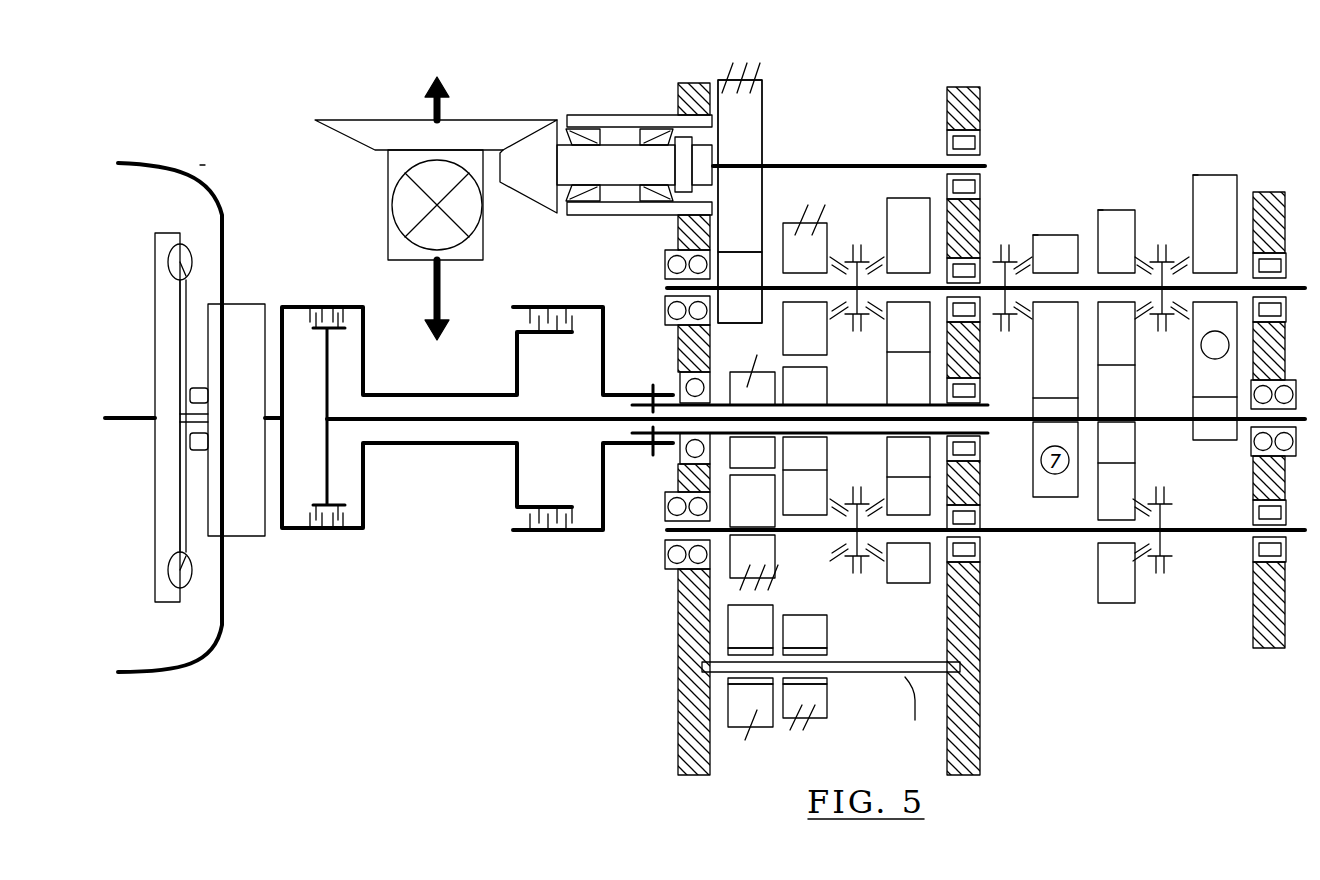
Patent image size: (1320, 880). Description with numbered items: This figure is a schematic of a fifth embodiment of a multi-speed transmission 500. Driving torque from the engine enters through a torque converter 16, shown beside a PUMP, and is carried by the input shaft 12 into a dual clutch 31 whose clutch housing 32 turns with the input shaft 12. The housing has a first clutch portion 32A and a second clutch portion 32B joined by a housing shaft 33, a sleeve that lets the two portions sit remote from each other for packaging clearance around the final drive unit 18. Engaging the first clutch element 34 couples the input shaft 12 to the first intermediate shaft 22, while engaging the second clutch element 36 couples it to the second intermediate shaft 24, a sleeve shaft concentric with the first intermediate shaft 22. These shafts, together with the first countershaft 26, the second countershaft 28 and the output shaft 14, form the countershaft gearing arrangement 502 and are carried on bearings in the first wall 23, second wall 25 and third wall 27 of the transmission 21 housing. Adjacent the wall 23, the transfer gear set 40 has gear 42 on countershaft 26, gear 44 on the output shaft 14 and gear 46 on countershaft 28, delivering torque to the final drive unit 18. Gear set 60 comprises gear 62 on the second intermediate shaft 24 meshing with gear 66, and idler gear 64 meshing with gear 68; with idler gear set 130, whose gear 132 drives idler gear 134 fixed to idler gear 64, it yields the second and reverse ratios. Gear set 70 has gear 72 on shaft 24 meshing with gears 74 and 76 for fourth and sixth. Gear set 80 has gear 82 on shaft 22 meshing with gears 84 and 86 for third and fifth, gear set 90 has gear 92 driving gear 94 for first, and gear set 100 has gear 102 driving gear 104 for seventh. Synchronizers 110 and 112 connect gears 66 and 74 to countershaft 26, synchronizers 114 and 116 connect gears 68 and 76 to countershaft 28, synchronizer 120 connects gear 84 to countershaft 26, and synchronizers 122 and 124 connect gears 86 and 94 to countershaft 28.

The multi-speed transmission 500 is at (283, 130).
The input member 12 is at (270, 420).
The torque converter 16 is at (155, 522).
The pump PUMP is at (236, 420).
The final drive unit 18 is at (528, 88).
The dual clutch 31 is at (339, 552).
The first clutch element 34 is at (325, 346).
The second clutch element 36 is at (573, 306).
The housing shaft 33 is at (468, 393).
The clutch housing 32 is at (391, 460).
The first clutch portion 32A is at (363, 530).
The second clutch portion 32B is at (513, 486).
The first intermediate shaft 22 is at (542, 423).
The second intermediate shaft 24 is at (648, 393).
The first support wall 23 is at (678, 612).
The second support wall 25 is at (978, 741).
The third support wall 27 is at (1268, 650).
The output member 14 is at (897, 160).
The second countershaft 28 is at (986, 284).
The first countershaft 26 is at (1033, 534).
The transfer gear set 40 is at (769, 68).
The transfer gear 44 is at (727, 132).
The transfer gear 46 is at (727, 318).
The gear set 60 is at (805, 192).
The gear 68 is at (792, 340).
The gear 62 is at (792, 398).
The gear 66 is at (792, 507).
The idler gear 64 is at (792, 646).
The gear 132 is at (770, 465).
The transfer gear 42 is at (739, 513).
The idler gear 134 is at (768, 641).
The idler gear set 130 is at (757, 742).
The gear 76 is at (895, 268).
The gear 72 is at (895, 396).
The gear set 70 is at (903, 596).
The gear 74 is at (895, 577).
The synchronizer 110 is at (847, 580).
The synchronizer 116 is at (873, 256).
The synchronizer 114 is at (840, 324).
The synchronizer 112 is at (873, 500).
The countershaft gearing arrangement 502 is at (1005, 165).
The transmission 21 is at (1086, 142).
The gear set 100 is at (1052, 227).
The gear 104 is at (1073, 269).
The gear 102 is at (1073, 395).
The gear 86 is at (1103, 251).
The gear 82 is at (1103, 407).
The gear set 80 is at (1134, 620).
The gear 84 is at (1103, 581).
The synchronizer 124 is at (1177, 252).
The synchronizer 122 is at (1149, 330).
The synchronizer 120 is at (1145, 502).
The gear set 90 is at (1211, 170).
The gear 94 is at (1202, 240).
The gear 92 is at (1214, 432).